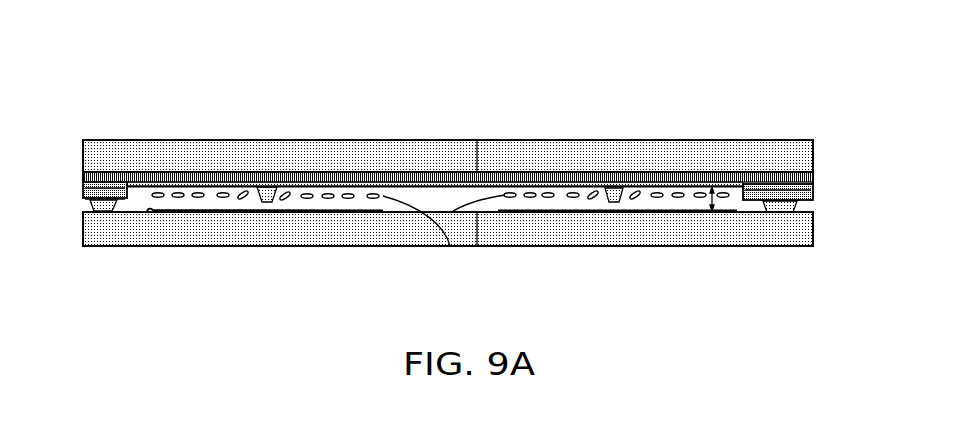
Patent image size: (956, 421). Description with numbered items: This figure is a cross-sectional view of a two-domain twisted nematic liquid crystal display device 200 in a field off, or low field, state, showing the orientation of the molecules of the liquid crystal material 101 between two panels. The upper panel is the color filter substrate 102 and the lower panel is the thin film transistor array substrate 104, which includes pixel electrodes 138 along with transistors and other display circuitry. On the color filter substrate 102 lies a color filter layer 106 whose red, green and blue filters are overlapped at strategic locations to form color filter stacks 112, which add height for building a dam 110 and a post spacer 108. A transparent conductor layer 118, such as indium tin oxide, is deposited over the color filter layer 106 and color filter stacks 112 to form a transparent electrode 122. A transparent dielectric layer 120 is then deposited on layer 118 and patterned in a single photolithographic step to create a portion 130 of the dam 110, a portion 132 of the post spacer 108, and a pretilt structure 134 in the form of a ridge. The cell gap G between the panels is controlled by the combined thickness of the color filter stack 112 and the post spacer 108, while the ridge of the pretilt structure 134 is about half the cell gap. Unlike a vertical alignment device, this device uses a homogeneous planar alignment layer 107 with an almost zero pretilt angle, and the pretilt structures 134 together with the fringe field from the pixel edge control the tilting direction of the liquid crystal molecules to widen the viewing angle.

The liquid crystal display device 200 is at (462, 64).
The substrate 102 is at (734, 152).
The substrate 104 is at (85, 238).
The color filter layer 106 is at (84, 140).
The post spacer 108 is at (812, 192).
The dam 110 is at (84, 190).
The color filter stack 112 is at (84, 176).
The layer 118 is at (378, 186).
The transparent electrode 122 is at (449, 186).
The layer 120 is at (88, 206).
The portion of dam 130 is at (92, 211).
The portion of post spacer 132 is at (797, 208).
The pretilt structure 134 is at (263, 203).
The pixel electrode 138 is at (353, 210).
The liquid crystal material 101 is at (450, 246).
The homogeneous alignment layer 107 is at (146, 189).
The cell gap G is at (712, 213).